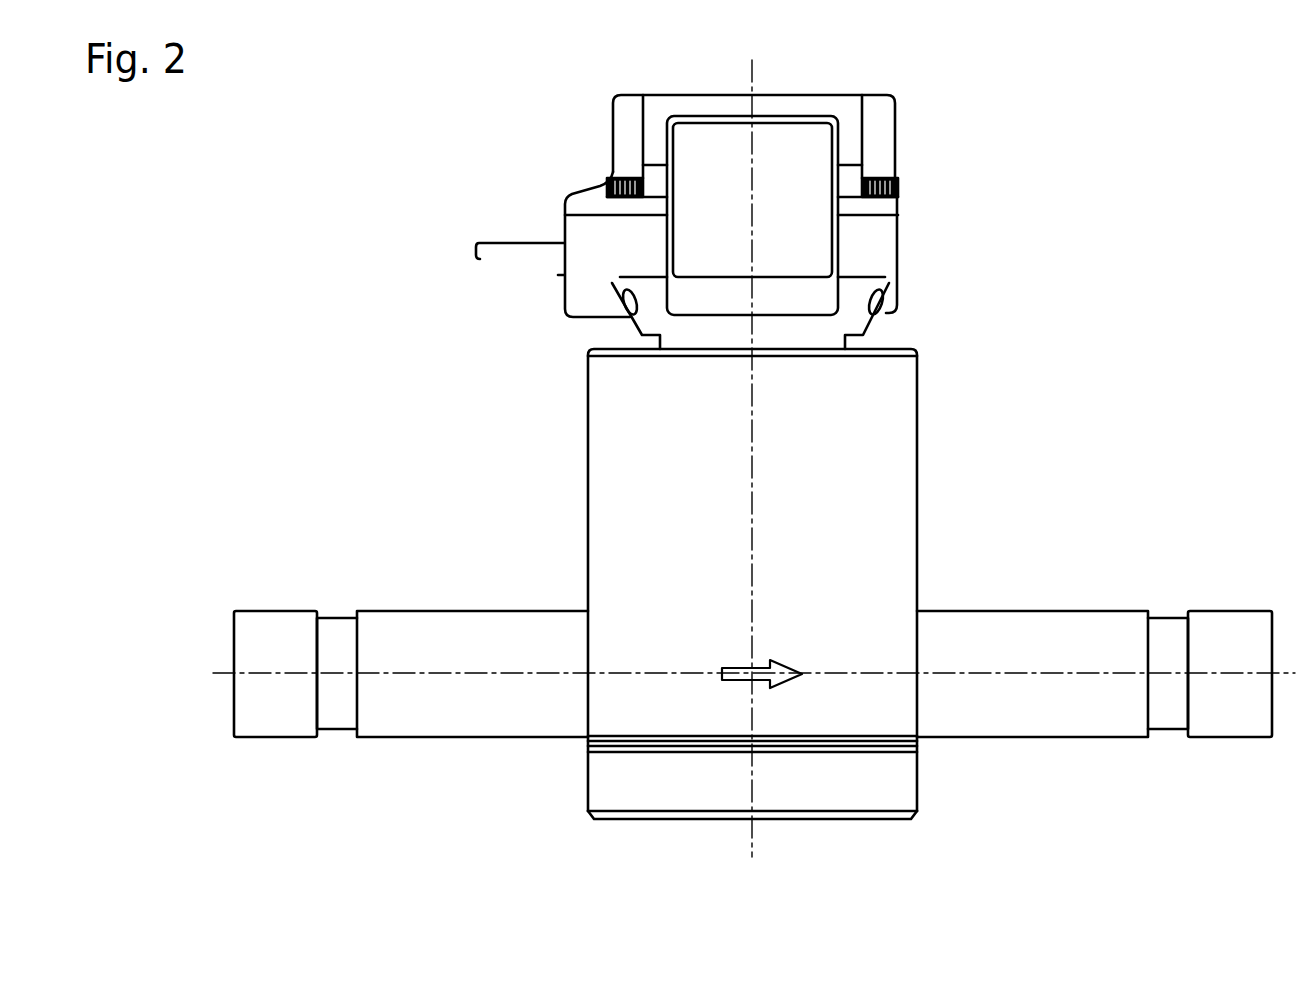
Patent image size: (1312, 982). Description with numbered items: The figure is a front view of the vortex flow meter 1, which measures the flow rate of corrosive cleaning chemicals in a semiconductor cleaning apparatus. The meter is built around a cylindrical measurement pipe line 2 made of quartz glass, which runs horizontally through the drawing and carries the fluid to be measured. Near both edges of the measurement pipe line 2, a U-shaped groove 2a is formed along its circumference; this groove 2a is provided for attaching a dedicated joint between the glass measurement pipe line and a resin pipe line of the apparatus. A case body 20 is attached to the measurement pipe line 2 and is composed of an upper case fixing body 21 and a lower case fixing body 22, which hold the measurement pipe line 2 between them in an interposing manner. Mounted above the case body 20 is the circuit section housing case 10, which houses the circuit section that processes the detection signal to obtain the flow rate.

The vortex flow meter 1 is at (1193, 333).
The circuit section housing case 10 is at (876, 245).
The case body 20 is at (918, 430).
The upper case fixing body 21 is at (900, 532).
The lower case fixing body 22 is at (905, 788).
The measurement pipe line 2 is at (1068, 623).
The U-shaped groove 2a is at (1167, 617).